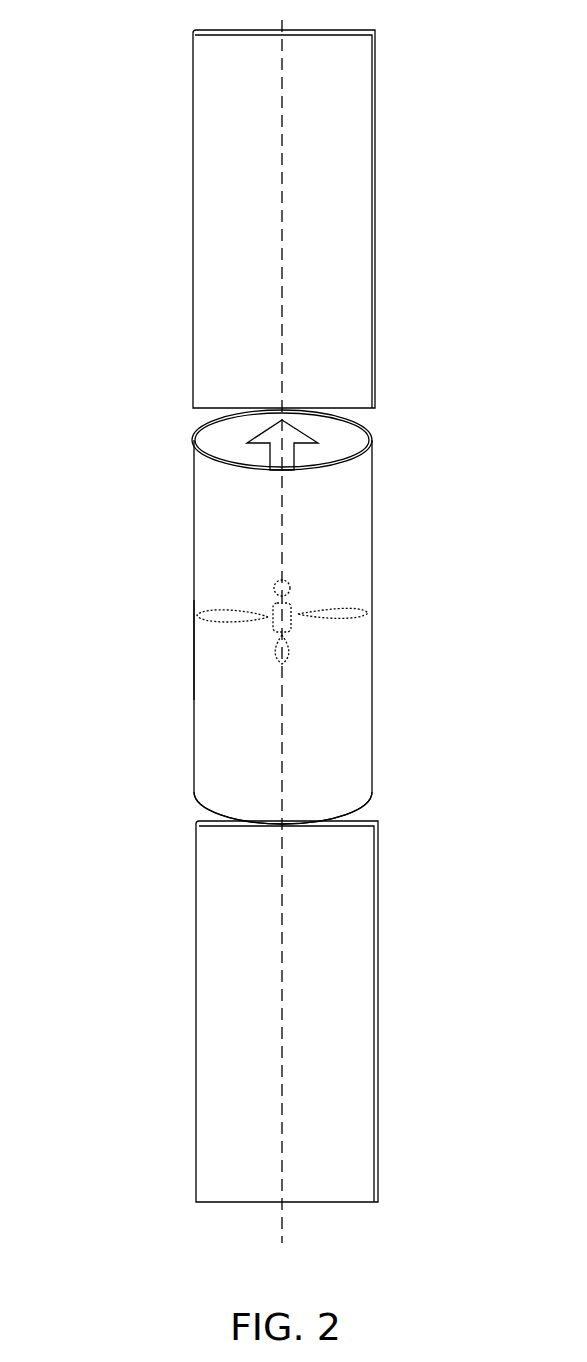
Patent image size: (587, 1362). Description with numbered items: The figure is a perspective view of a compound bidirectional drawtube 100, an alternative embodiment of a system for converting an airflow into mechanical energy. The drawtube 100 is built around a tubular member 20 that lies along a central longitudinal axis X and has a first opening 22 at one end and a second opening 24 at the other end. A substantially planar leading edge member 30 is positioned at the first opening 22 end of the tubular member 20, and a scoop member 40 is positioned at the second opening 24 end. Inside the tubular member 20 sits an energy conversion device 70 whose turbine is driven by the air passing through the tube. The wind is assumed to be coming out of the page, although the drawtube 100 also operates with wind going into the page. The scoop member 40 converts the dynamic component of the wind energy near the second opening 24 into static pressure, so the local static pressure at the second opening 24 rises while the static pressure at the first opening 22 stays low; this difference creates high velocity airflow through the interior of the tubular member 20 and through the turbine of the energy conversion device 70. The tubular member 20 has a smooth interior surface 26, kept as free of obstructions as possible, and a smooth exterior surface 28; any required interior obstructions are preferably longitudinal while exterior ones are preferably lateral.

The compound drawtube 100 is at (126, 50).
The substantially planar leading edge member 30 is at (378, 177).
The interior surface 26 is at (324, 437).
The first opening 22 is at (374, 438).
The tubular member 20 is at (377, 587).
The energy conversion device 70 is at (362, 615).
The exterior surface 28 is at (193, 648).
The second opening 24 is at (372, 800).
The scoop member 40 is at (380, 1045).
The longitudinal axis X is at (283, 1220).